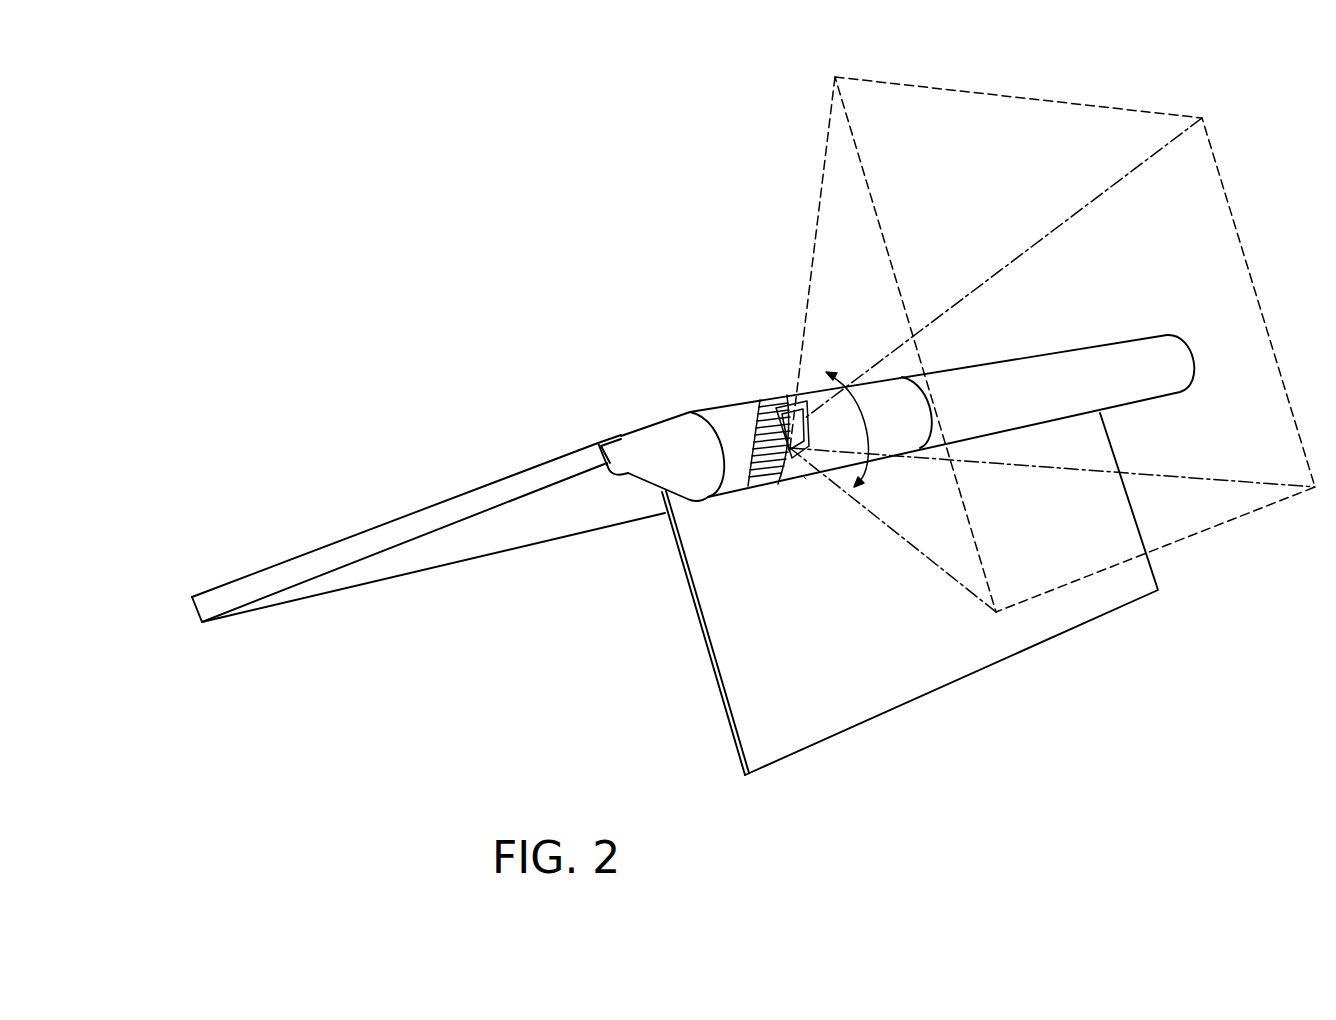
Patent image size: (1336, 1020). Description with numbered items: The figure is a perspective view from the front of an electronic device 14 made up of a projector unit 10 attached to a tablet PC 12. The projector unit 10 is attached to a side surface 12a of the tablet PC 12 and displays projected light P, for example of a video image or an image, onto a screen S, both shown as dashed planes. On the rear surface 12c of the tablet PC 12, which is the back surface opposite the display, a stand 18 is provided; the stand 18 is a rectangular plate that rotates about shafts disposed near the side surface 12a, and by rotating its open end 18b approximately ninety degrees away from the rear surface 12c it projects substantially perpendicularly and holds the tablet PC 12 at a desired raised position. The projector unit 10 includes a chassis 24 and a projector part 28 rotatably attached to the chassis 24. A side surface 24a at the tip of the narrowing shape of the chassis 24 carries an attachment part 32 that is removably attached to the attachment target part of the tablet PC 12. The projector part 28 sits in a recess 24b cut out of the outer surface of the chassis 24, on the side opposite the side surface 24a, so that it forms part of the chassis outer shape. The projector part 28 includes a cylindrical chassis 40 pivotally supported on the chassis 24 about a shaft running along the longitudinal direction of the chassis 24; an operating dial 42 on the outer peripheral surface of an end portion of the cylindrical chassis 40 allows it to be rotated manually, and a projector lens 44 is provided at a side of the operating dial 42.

The projector unit 10 is at (857, 533).
The tablet PC 12 is at (428, 538).
The side surface 12a is at (628, 478).
The rear surface 12c is at (532, 541).
The electronic device 14 is at (481, 274).
The stand 18 is at (910, 631).
The open end 18b is at (745, 778).
The chassis 24 is at (1020, 372).
The side surface 24a is at (570, 420).
The attachment part 32 is at (598, 450).
The recess 24b is at (910, 378).
The projector part 28 is at (806, 487).
The cylindrical chassis 40 is at (878, 398).
The operating dial 42 is at (769, 440).
The projector lens 44 is at (793, 420).
The screen S is at (1097, 100).
The projected light P is at (1030, 243).